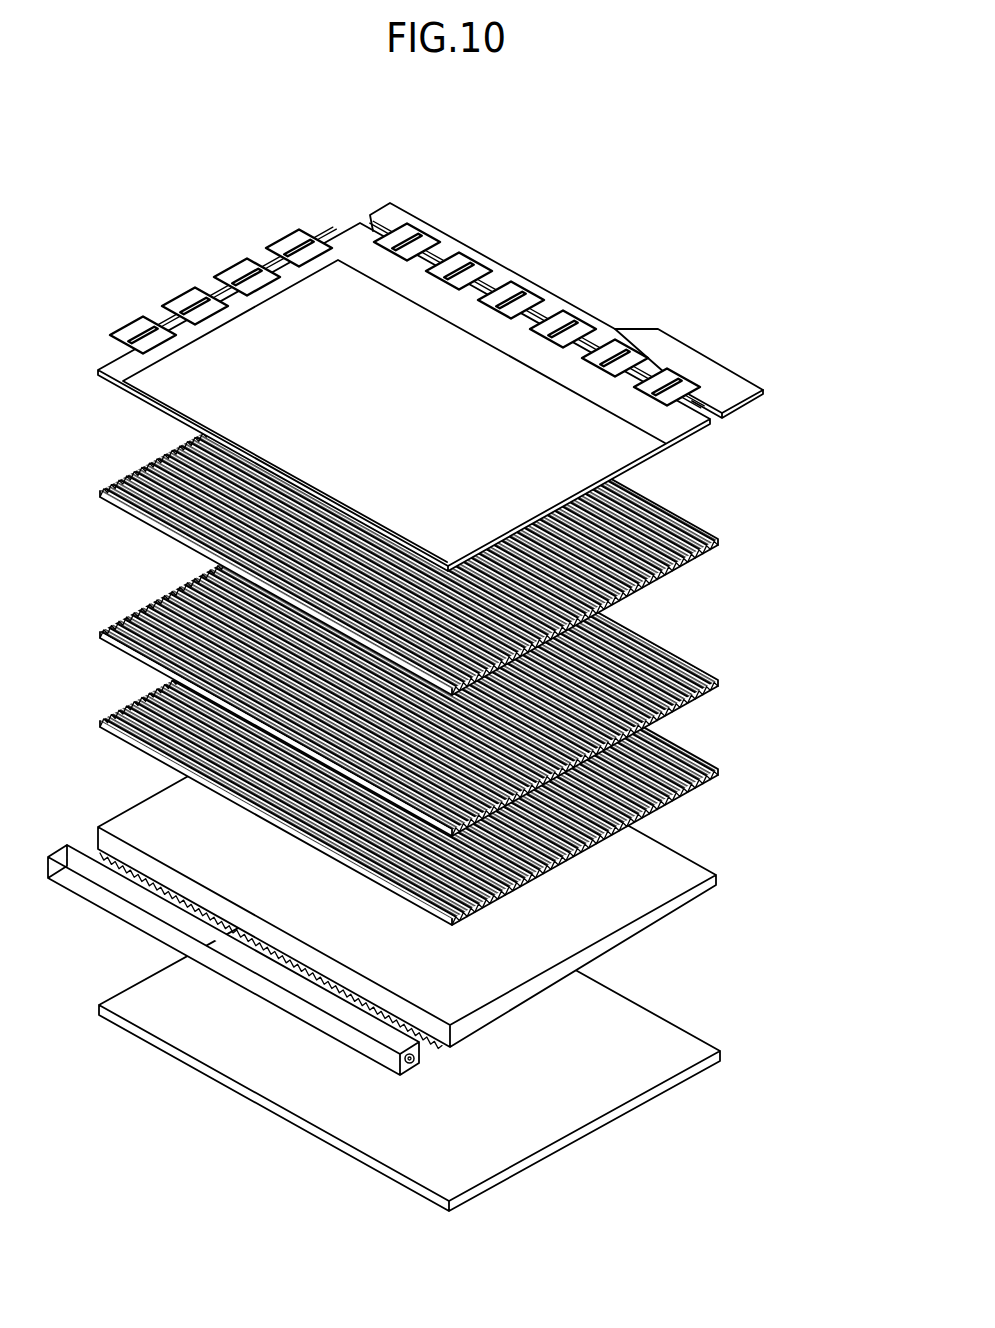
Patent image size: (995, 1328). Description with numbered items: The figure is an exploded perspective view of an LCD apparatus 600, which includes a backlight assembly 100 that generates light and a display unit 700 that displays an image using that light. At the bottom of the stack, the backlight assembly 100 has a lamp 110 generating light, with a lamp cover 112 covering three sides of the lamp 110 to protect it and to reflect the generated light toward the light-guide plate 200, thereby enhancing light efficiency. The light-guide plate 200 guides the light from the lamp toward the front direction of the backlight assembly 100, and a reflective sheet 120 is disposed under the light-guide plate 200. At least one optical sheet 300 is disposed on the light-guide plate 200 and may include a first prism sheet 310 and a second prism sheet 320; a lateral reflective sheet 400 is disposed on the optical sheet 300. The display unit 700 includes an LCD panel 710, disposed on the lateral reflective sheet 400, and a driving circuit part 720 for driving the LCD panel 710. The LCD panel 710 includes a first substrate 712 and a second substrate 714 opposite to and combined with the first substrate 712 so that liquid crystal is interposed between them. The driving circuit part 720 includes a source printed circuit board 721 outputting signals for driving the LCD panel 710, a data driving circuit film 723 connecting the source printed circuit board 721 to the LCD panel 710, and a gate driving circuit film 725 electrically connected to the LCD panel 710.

The LCD apparatus 600 is at (445, 654).
The display unit 700 is at (396, 373).
The LCD panel 710 is at (370, 397).
The first substrate 712 is at (116, 374).
The second substrate 714 is at (170, 390).
The driving circuit part 720 is at (566, 296).
The source printed circuit board 721 is at (649, 340).
The data driving circuit film 723 is at (531, 300).
The gate driving circuit film 725 is at (295, 244).
The backlight assembly 100 is at (454, 783).
The lateral reflective sheet 400 is at (707, 500).
The optical sheet 300 is at (454, 703).
The second prism sheet 320 is at (705, 663).
The first prism sheet 310 is at (707, 750).
The light-guide plate 200 is at (707, 853).
The reflective sheet 120 is at (707, 1033).
The lamp cover 112 is at (281, 996).
The lamp 110 is at (419, 1067).